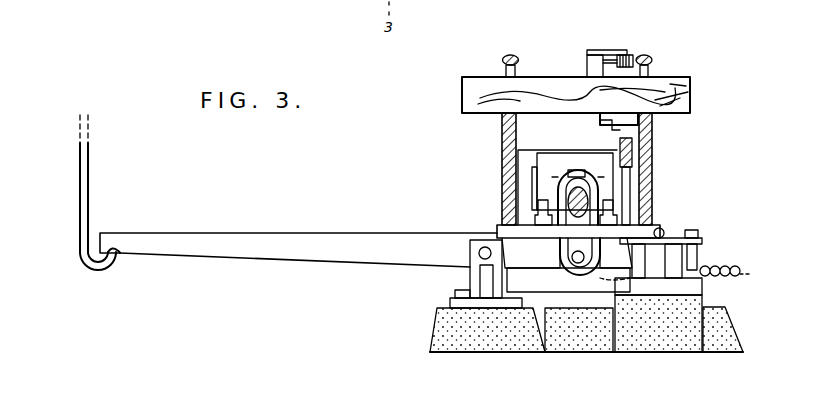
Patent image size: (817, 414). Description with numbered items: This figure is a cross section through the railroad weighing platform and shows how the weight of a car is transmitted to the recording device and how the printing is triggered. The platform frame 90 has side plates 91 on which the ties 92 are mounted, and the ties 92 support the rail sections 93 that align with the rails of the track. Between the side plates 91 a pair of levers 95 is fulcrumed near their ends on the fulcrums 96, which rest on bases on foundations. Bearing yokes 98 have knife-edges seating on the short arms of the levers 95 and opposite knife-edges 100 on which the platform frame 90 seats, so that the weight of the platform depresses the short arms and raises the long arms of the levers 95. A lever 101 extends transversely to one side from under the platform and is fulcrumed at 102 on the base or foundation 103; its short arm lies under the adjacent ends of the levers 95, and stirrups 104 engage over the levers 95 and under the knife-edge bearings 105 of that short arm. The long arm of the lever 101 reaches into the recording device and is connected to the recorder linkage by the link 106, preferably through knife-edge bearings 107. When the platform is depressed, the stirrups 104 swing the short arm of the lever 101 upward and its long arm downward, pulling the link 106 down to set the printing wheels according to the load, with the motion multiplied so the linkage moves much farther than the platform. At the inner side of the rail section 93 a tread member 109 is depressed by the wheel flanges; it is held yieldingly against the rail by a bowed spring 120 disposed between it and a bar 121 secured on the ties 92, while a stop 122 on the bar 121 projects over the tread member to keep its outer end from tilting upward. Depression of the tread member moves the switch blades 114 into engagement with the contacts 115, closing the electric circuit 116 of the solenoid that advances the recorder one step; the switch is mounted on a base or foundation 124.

The platform frame 90 is at (497, 150).
The side plates 91 is at (502, 134).
The ties 92 is at (690, 90).
The rail sections 93 is at (652, 59).
The levers 95 is at (569, 178).
The fulcrums 96 is at (537, 209).
The bearing yokes 98 is at (530, 193).
The knife-edges 100 is at (497, 226).
The lever 101 is at (357, 244).
The fulcrum 102 is at (468, 251).
The base or foundation 103 is at (437, 312).
The stirrups 104 is at (592, 190).
The knife-edge bearings 105 is at (562, 256).
The link 106 is at (80, 189).
The knife-edge bearings 107 is at (121, 258).
The tread member 109 is at (634, 57).
The switch blades 114 is at (660, 236).
The contacts 115 is at (632, 270).
The electric circuit 116 is at (740, 266).
The bowed springs 120 is at (600, 58).
The bars 121 is at (587, 66).
The stops 122 is at (607, 50).
The base or foundation 124 is at (700, 290).